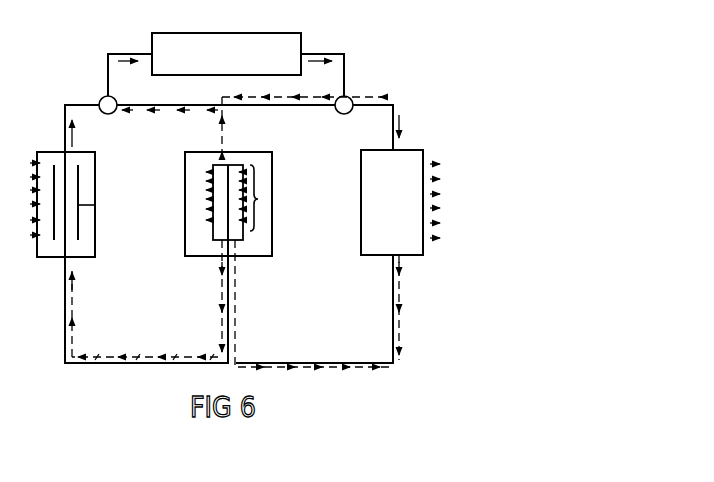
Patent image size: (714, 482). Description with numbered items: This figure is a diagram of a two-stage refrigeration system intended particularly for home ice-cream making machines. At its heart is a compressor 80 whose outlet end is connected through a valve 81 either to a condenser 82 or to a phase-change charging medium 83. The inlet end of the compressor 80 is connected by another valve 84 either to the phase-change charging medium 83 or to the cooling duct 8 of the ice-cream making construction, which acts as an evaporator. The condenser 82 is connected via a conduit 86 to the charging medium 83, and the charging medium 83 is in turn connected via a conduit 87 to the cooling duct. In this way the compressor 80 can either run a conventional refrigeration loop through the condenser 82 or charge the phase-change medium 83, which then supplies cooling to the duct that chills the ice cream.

The compressor 80 is at (250, 33).
The valve 81 is at (349, 97).
The valve 84 is at (113, 97).
The condenser 82 is at (413, 150).
The phase-change charging medium 83 is at (245, 150).
The conduit 86 is at (95, 167).
The cooling duct 8 is at (95, 205).
The conduit 87 is at (133, 357).